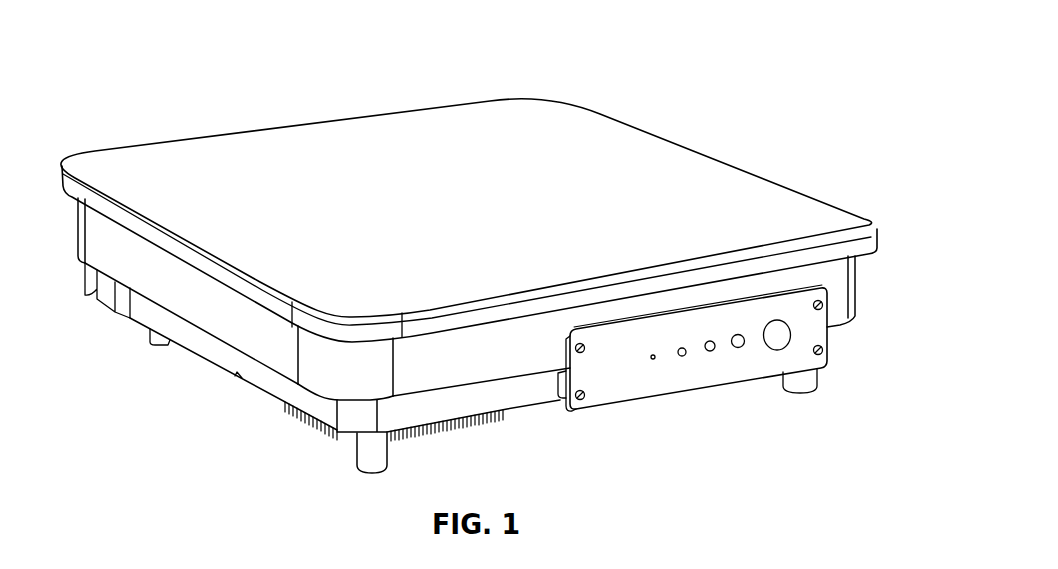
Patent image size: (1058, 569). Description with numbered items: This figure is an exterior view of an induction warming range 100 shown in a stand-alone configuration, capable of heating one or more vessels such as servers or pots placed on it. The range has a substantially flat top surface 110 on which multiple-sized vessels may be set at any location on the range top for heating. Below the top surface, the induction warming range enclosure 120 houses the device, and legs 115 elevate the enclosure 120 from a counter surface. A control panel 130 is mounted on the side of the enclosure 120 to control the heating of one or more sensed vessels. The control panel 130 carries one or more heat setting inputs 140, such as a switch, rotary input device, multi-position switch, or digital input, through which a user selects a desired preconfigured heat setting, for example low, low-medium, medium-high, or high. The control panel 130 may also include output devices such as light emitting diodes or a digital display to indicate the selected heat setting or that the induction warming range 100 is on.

The induction warming range 100 is at (141, 51).
The top surface 110 is at (269, 128).
The legs 115 is at (370, 455).
The induction warming range enclosure 120 is at (836, 286).
The control panel 130 is at (815, 333).
The heat setting inputs 140 is at (652, 410).